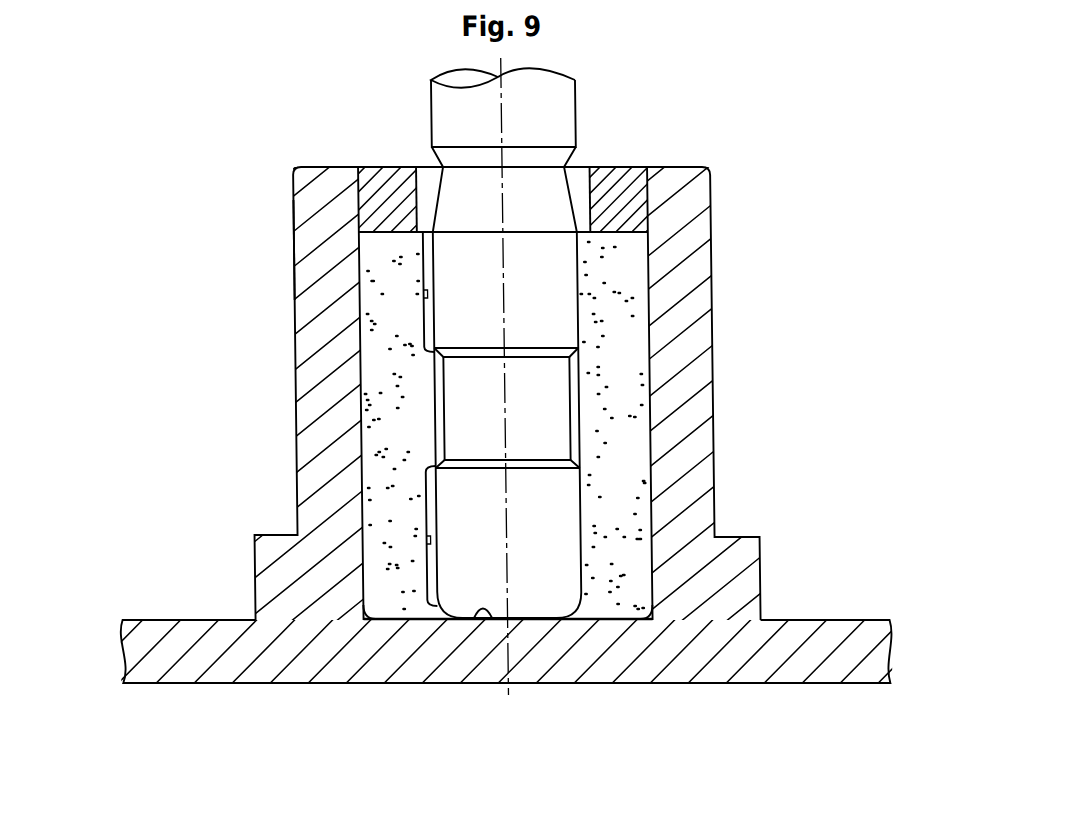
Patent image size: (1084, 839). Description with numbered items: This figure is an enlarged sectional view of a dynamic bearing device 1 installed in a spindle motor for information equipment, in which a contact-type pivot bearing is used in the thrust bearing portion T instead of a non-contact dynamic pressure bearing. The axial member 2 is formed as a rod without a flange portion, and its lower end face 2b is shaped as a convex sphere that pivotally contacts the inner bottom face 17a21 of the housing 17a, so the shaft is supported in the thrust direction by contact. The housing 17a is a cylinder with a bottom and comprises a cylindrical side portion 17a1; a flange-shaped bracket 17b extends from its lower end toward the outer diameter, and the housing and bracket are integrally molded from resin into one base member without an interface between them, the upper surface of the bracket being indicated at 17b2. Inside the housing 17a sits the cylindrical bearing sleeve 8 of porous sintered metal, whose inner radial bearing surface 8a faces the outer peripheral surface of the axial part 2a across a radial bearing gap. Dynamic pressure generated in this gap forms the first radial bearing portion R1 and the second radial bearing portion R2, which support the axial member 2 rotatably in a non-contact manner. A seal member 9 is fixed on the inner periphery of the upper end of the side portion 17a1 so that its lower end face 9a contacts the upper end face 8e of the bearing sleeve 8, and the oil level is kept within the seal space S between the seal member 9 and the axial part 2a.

The dynamic bearing device 1 is at (727, 128).
The axial member 2 is at (582, 103).
The axial part 2a is at (592, 485).
The lower end face 2b is at (559, 623).
The bearing sleeve 8 is at (653, 378).
The radial bearing surface 8a is at (649, 312).
The upper end face 8e is at (609, 216).
The seal member 9 is at (375, 182).
The lower end face 9a is at (383, 210).
The seal space S is at (431, 206).
The first radial bearing portion R1 is at (419, 295).
The second radial bearing portion R2 is at (419, 541).
The thrust bearing portion T is at (514, 622).
The housing 17a is at (714, 213).
The side portion 17a1 is at (306, 246).
The inner bottom face 17a21 is at (480, 618).
The bracket 17b is at (759, 663).
The base plate upper surface 17b2 is at (816, 620).